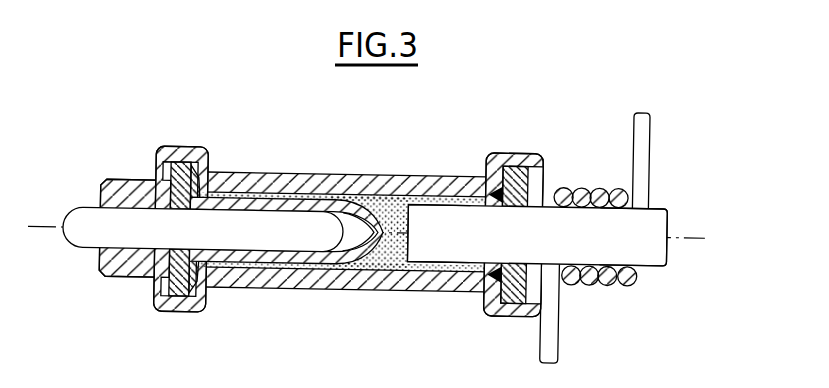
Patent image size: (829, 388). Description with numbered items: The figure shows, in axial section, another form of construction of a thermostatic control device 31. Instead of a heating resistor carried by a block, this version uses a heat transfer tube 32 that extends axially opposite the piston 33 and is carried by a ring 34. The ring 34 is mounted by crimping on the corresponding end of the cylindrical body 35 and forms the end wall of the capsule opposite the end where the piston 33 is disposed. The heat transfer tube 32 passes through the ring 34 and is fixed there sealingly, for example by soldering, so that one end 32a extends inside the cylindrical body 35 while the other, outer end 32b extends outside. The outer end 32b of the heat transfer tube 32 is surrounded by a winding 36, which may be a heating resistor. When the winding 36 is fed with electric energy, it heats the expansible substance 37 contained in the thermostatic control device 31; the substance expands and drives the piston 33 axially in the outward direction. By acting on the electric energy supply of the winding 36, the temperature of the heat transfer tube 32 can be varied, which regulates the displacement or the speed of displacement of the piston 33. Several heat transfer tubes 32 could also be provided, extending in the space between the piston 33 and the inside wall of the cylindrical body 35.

The thermostatic control device 31 is at (292, 158).
The heat transfer tube 32 is at (540, 210).
The end of heat transfer tube 32a is at (442, 228).
The outer end of heat transfer tube 32b is at (633, 229).
The piston 33 is at (92, 218).
The ring 34 is at (514, 292).
The cylindrical body 35 is at (322, 264).
The winding 36 is at (610, 284).
The expansible substance 37 is at (393, 264).